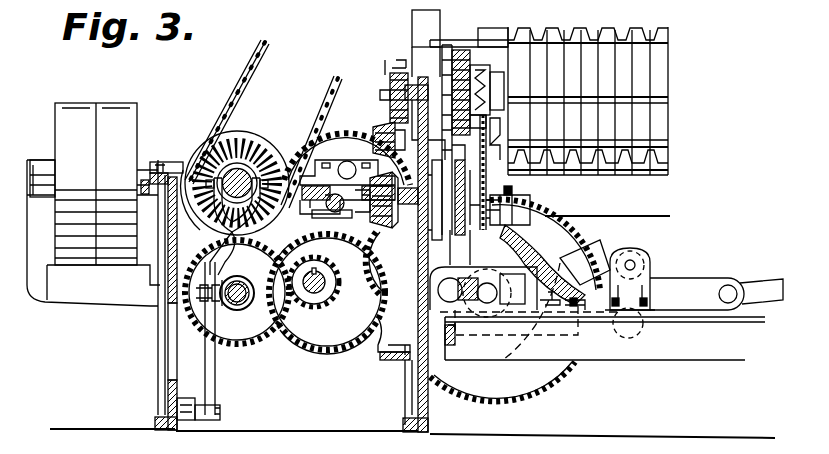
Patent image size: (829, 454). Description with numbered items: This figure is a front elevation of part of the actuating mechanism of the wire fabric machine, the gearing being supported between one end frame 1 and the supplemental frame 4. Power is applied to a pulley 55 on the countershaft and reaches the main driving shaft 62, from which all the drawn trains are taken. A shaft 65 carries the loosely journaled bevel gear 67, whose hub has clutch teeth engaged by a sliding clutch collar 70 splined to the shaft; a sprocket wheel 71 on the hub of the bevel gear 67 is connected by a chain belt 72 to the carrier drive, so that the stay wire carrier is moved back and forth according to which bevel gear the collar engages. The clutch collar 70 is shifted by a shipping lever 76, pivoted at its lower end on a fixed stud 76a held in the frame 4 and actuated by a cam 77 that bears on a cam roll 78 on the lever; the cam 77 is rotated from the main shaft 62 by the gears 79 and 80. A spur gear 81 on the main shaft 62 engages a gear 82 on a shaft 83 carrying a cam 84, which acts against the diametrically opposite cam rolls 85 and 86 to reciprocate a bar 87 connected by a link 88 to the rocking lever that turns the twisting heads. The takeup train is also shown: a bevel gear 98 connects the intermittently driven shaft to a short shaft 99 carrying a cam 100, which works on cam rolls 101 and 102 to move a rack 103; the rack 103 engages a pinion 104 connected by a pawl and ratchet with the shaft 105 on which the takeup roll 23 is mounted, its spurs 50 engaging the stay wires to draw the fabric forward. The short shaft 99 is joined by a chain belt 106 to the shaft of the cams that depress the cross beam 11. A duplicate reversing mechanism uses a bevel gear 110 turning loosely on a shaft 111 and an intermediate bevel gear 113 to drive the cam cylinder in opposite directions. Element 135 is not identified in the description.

The end frame 1 is at (410, 25).
The supplemental frame 4 is at (165, 346).
The cross beam 11 is at (466, 54).
The takeup roll 23 is at (509, 52).
The spurs 50 is at (526, 30).
The pulley 55 is at (117, 115).
The main driving shaft 62 is at (323, 302).
The shaft 65 is at (242, 170).
The bevel gear 67 is at (198, 162).
The sliding clutch collar 70 is at (203, 222).
The sprocket wheel 71 is at (221, 150).
The chain belt 72 is at (254, 64).
The shipping lever 76 is at (211, 362).
The fixed stud 76a is at (215, 413).
The cam 77 is at (246, 311).
The cam roll 78 is at (240, 283).
The gear 79 is at (272, 266).
The gear 80 is at (315, 270).
The spur gear 81 is at (314, 345).
The gear 82 is at (403, 330).
The shaft 83 is at (486, 306).
The cam 84 is at (516, 363).
The cam roll 85 is at (430, 291).
The cam roll 86 is at (622, 262).
The bar 87 is at (683, 288).
The link 88 is at (763, 288).
The bevel gear 98 is at (376, 229).
The short shaft 99 is at (560, 213).
The cam 100 is at (457, 215).
The cam roll 101 is at (465, 267).
The cam roll 102 is at (462, 165).
The rack 103 is at (445, 60).
The pinion 104 is at (414, 62).
The shaft 105 is at (500, 122).
The chain belt 106 is at (545, 200).
The bevel gear 110 is at (345, 128).
The shaft 111 is at (347, 162).
The intermediate bevel gear 113 is at (396, 138).
The worm 135 is at (480, 92).